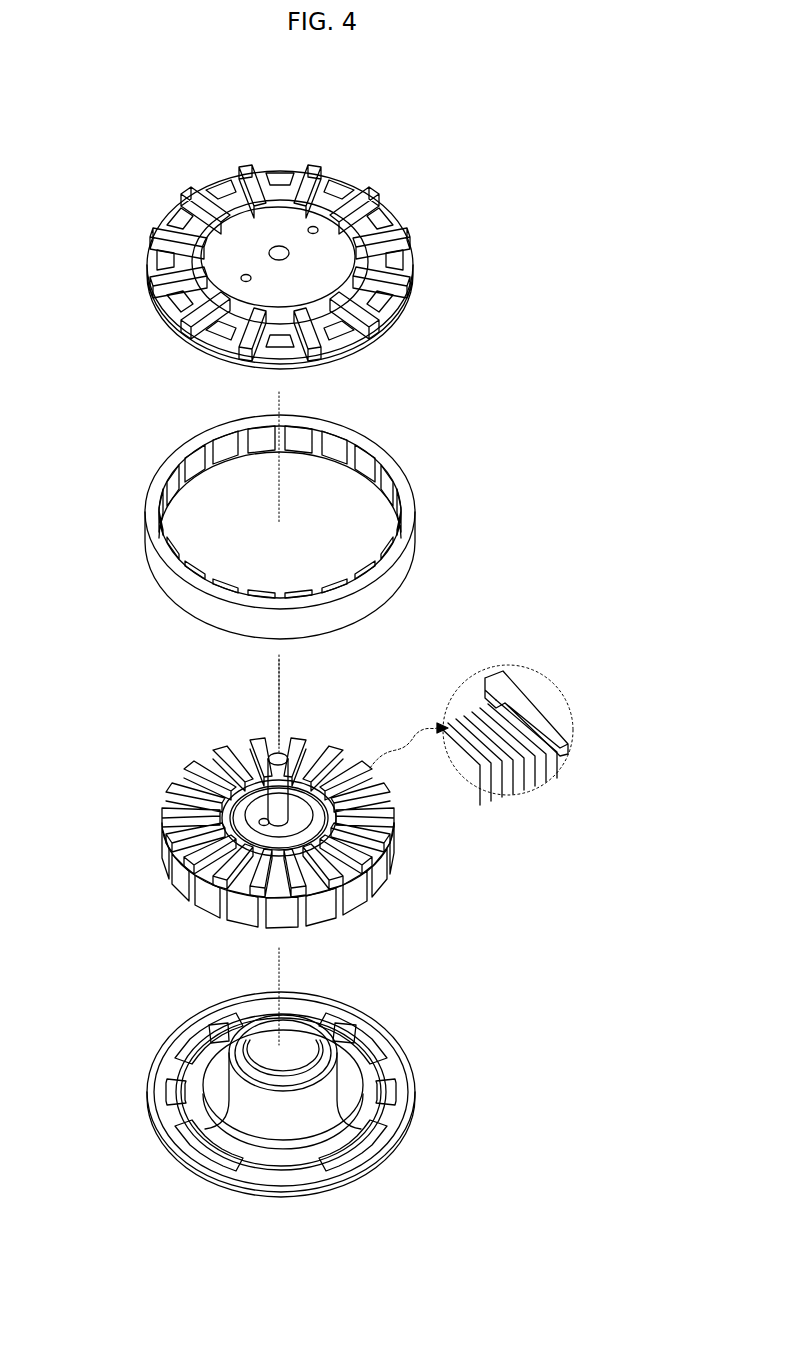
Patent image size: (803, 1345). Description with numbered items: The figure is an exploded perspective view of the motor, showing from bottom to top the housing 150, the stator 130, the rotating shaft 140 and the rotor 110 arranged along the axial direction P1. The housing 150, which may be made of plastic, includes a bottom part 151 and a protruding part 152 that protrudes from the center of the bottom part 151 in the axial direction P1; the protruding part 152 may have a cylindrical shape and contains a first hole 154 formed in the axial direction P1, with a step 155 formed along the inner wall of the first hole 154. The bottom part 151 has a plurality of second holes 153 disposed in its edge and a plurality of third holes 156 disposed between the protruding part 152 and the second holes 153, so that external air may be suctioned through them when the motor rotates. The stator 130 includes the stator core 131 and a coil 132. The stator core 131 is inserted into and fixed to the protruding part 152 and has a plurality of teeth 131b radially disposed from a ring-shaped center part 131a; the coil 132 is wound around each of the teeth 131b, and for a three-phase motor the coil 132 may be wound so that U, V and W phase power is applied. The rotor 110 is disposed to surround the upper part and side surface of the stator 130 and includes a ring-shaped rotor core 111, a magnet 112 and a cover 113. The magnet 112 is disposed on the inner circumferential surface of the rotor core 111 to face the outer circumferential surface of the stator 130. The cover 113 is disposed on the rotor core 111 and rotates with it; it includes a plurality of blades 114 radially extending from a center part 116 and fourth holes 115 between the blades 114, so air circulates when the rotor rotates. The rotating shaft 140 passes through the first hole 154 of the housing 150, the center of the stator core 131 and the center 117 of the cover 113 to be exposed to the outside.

The rotor 110 is at (505, 343).
The rotor core 111 is at (400, 568).
The magnet 112 is at (362, 455).
The cover 113 is at (352, 138).
The blades 114 is at (392, 222).
The fourth holes 115 is at (418, 263).
The center part 116 is at (162, 229).
The center of the cover 117 is at (281, 249).
The stator 130 is at (437, 818).
The stator core 131 is at (68, 818).
The ring-shaped center part 131a is at (203, 818).
The teeth 131b is at (197, 852).
The coil 132 is at (508, 729).
The rotating shaft 140 is at (262, 768).
The axial direction P1 is at (277, 676).
The housing 150 is at (444, 1099).
The bottom part 151 is at (400, 1137).
The protruding part 152 is at (207, 1040).
The second holes 153 is at (380, 1050).
The first hole 154 is at (247, 1043).
The step 155 is at (318, 1042).
The third holes 156 is at (337, 1150).